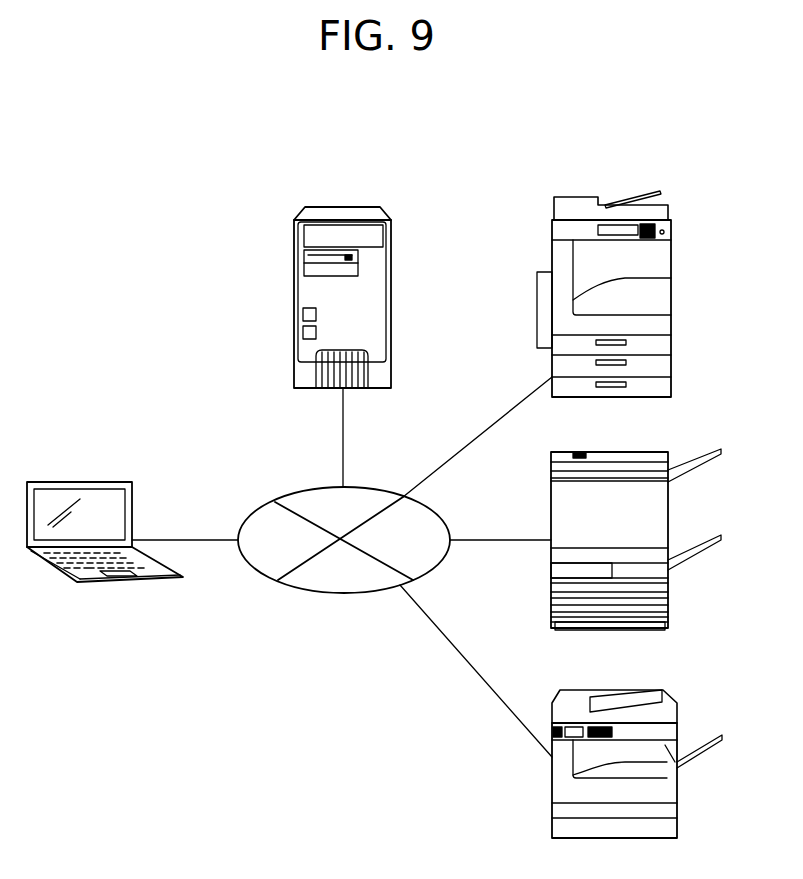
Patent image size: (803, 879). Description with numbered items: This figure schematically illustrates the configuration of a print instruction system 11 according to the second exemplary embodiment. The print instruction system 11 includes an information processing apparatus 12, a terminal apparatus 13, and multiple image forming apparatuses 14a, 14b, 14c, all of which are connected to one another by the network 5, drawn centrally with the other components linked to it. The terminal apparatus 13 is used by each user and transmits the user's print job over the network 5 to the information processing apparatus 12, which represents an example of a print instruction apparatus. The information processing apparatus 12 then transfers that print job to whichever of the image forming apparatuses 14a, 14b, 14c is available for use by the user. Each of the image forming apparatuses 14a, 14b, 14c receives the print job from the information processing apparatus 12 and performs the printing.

The print instruction system 11 is at (262, 189).
The information processing apparatus 12 is at (345, 206).
The terminal apparatus 13 is at (82, 482).
The network 5 is at (325, 597).
The image forming apparatus 14a is at (700, 248).
The image forming apparatus 14b is at (700, 440).
The image forming apparatus 14c is at (677, 702).